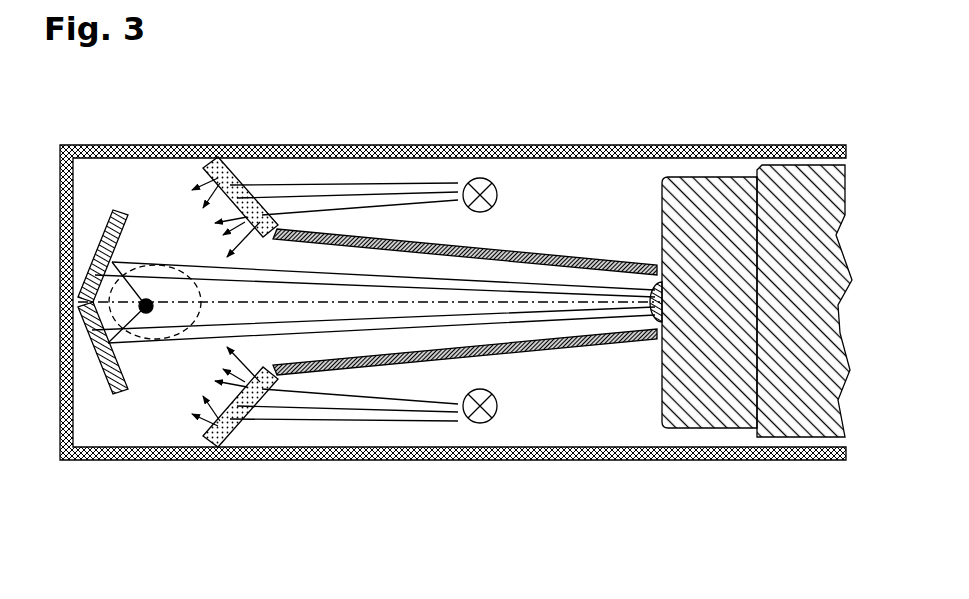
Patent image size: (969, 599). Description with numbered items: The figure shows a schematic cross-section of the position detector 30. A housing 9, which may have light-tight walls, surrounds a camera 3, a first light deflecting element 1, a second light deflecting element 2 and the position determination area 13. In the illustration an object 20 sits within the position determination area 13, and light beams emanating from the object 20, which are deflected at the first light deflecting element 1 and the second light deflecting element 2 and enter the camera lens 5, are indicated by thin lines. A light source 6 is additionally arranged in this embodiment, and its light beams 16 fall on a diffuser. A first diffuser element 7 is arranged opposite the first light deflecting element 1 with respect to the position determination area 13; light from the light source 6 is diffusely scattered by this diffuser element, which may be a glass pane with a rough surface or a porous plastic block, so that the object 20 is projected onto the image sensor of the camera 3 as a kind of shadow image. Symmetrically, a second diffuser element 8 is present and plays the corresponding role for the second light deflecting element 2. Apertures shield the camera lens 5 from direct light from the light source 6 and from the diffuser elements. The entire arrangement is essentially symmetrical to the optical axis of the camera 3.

The first light deflecting element 1 is at (113, 230).
The second light deflecting element 2 is at (96, 340).
The camera 3 is at (705, 429).
The lens 5 is at (643, 317).
The light source 6 is at (498, 196).
The first diffuser element 7 is at (247, 433).
The second diffuser element 8 is at (233, 180).
The housing 9 is at (548, 461).
The position determination area 13 is at (140, 266).
The light beams 16 is at (290, 186).
The object 20 is at (150, 313).
The position detector 30 is at (436, 116).